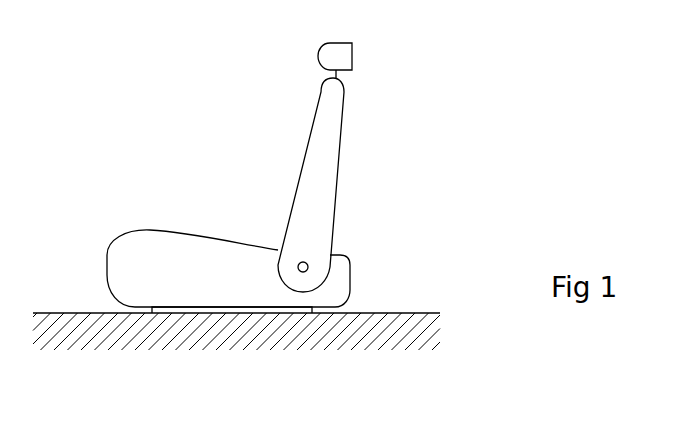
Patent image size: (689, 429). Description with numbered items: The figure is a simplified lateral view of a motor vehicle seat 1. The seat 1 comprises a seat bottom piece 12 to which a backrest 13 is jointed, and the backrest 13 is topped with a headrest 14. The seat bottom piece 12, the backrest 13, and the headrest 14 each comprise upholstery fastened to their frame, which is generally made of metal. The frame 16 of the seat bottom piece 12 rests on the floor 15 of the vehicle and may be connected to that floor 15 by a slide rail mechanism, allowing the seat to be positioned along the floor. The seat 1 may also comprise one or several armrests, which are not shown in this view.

The motor vehicle seat 1 is at (137, 166).
The seat bottom piece 12 is at (128, 258).
The backrest 13 is at (325, 183).
The headrest 14 is at (345, 57).
The floor 15 is at (242, 330).
The frame 16 is at (152, 308).